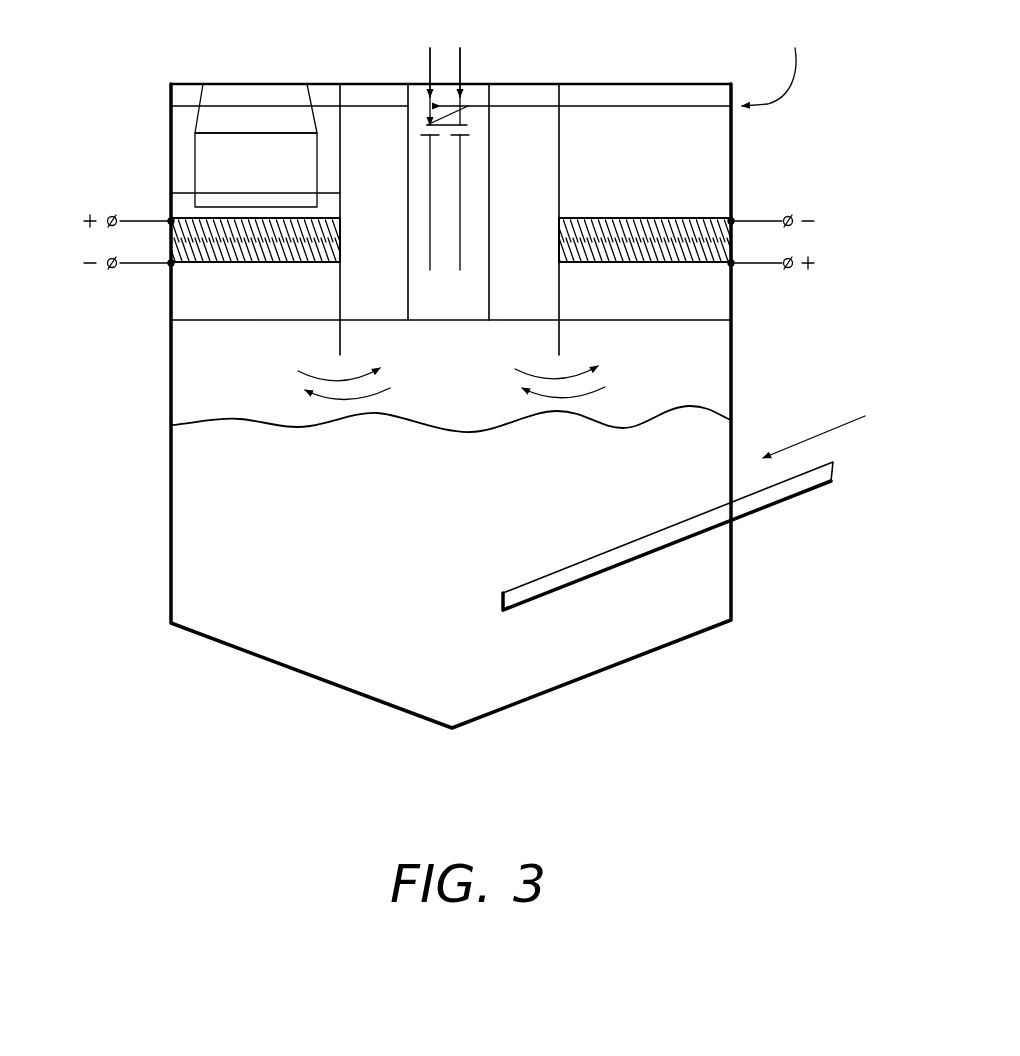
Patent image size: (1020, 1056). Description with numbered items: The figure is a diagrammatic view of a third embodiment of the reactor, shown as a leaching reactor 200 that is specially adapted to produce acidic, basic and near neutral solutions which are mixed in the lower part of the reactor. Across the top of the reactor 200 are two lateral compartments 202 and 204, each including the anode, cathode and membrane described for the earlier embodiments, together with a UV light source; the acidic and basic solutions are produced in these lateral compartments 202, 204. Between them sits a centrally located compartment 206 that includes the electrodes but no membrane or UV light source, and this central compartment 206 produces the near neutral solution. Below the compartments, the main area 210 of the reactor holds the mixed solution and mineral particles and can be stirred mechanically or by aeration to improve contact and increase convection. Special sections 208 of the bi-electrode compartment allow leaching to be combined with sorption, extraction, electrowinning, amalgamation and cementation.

The leaching reactor 200 is at (171, 555).
The lateral compartment 202 is at (186, 278).
The lateral compartment 204 is at (713, 295).
The centrally located compartment 206 is at (466, 124).
The special sections of the bi-electrode compartment 208 is at (360, 300).
The main area of the reactor 210 is at (205, 395).